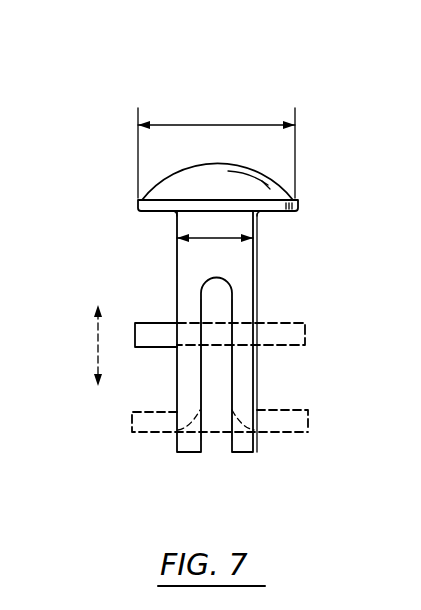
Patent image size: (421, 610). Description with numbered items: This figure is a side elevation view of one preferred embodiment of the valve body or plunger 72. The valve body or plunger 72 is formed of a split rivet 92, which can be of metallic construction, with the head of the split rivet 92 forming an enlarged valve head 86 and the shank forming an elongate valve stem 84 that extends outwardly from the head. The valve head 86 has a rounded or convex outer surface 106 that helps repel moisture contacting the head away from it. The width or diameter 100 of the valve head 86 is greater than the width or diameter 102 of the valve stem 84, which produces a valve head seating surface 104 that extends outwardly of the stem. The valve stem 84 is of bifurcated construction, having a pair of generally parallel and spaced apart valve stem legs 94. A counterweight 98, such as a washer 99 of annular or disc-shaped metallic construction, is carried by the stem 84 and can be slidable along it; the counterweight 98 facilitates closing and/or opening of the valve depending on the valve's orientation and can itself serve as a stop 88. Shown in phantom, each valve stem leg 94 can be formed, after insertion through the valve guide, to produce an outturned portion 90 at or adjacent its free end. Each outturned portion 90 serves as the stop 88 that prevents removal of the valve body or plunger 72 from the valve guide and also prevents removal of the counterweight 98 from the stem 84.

The valve body or plunger 72 is at (204, 247).
The width or diameter of valve head 100 is at (232, 123).
The valve head 86 is at (199, 198).
The rounded or convex outer surface 106 is at (277, 198).
The valve head seating surface 104 is at (150, 213).
The width or diameter of valve stem 102 is at (210, 240).
The valve stem 84 is at (237, 331).
The washer 99 is at (150, 312).
The counterweight 98 is at (306, 317).
The valve stem leg 94 is at (187, 361).
The outturned portion 90 is at (300, 408).
The split rivet 92 is at (152, 472).
The stop 88 is at (284, 450).